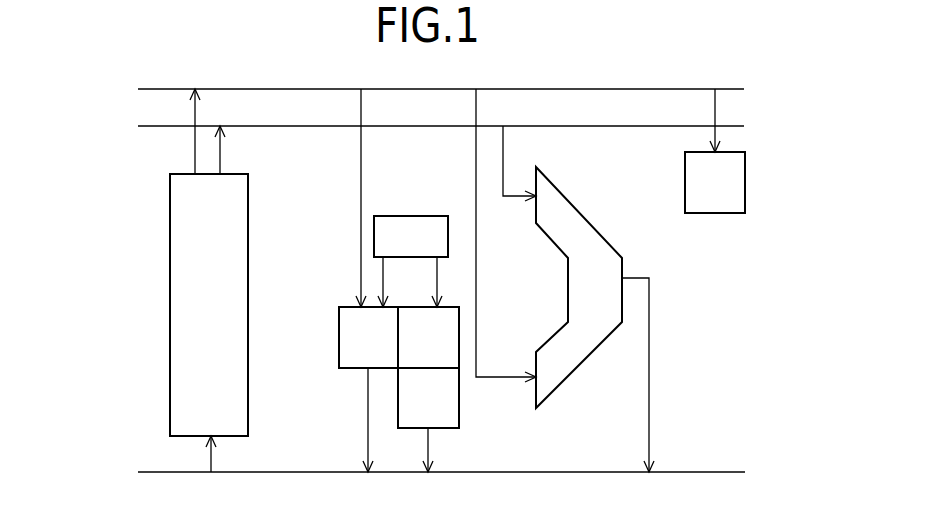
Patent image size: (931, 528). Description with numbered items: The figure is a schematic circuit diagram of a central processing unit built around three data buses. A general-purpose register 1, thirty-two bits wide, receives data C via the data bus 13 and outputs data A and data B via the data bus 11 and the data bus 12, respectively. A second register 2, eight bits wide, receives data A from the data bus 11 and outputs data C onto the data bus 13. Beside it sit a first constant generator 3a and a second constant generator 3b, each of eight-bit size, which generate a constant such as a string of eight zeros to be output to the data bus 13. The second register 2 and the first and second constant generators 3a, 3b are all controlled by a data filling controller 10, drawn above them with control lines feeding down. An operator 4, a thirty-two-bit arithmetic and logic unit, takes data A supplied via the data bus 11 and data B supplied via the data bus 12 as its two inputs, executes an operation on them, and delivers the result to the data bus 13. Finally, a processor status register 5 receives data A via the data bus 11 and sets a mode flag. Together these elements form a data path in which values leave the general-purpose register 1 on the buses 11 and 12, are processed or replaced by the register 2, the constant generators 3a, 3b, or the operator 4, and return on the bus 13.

The general-purpose register 1 is at (183, 353).
The second register 2 is at (340, 350).
The first constant generator 3a is at (450, 337).
The second constant generator 3b is at (452, 419).
The operator 4 is at (578, 353).
The processor status register 5 is at (731, 184).
The data filling controller 10 is at (412, 225).
The data bus 11 is at (138, 89).
The data bus 12 is at (138, 126).
The data bus 13 is at (692, 472).